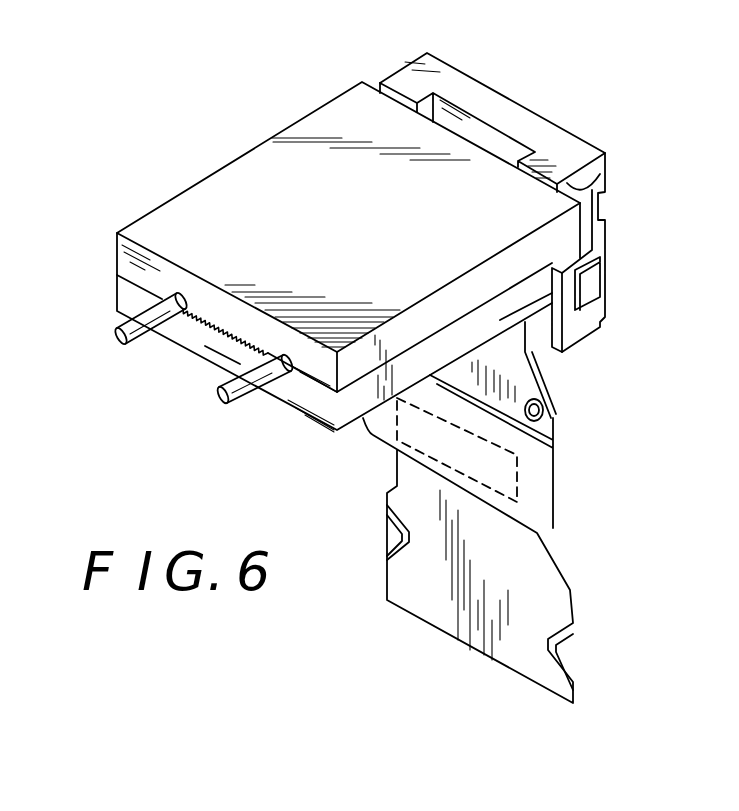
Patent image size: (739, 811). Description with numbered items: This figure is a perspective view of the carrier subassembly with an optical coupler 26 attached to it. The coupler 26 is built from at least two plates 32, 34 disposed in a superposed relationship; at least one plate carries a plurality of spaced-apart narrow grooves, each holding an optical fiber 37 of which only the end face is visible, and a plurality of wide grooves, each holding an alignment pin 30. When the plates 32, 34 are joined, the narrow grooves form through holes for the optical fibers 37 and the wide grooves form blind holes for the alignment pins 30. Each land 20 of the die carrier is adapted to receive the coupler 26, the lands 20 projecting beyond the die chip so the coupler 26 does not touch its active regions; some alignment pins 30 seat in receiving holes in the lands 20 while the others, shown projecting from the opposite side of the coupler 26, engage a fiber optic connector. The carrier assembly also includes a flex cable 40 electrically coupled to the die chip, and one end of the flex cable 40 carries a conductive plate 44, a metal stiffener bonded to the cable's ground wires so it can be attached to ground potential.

The land 20 is at (395, 84).
The optical coupler 26 is at (200, 182).
The plate 32 is at (298, 224).
The alignment pin 30 is at (113, 333).
The plate 34 is at (178, 334).
The optical fiber 37 is at (222, 338).
The flex cable 40 is at (518, 470).
The conductive plate 44 is at (537, 507).